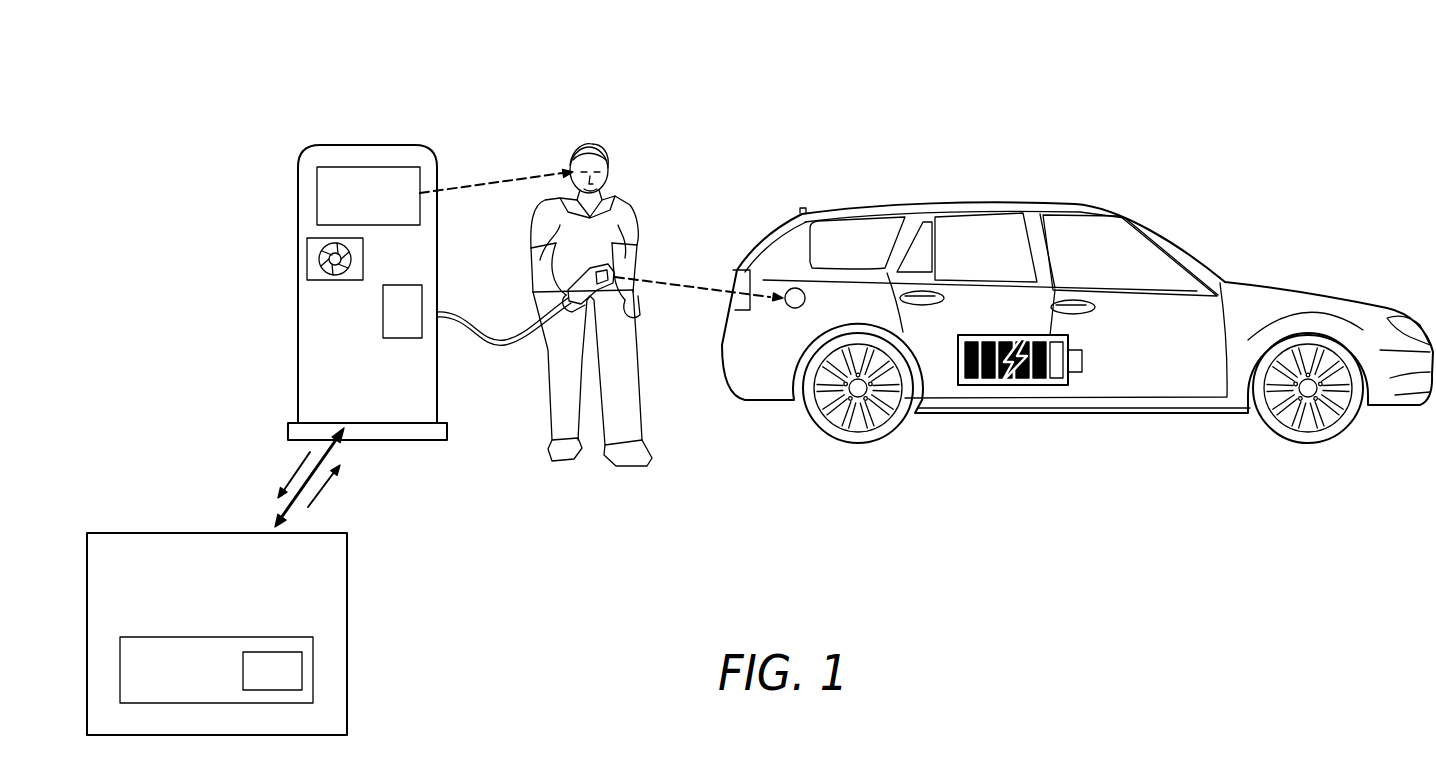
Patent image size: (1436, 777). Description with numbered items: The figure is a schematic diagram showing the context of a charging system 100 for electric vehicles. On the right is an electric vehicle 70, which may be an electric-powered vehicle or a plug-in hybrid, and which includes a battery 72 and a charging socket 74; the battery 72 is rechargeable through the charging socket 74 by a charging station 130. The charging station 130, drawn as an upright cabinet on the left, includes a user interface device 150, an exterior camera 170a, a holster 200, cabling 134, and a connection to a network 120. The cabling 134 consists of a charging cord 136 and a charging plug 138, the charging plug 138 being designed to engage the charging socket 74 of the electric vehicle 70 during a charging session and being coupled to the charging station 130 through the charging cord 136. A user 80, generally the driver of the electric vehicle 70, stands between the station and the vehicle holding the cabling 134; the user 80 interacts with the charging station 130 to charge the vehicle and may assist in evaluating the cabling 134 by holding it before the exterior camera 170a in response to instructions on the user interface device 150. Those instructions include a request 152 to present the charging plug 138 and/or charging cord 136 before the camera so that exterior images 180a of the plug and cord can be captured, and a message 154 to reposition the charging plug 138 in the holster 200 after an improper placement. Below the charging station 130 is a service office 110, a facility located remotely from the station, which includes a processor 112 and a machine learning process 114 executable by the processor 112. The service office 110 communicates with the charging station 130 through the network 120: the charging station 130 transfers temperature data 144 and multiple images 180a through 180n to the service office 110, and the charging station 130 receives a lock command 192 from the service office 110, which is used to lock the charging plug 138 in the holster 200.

The electric vehicle 70 is at (903, 202).
The battery 72 is at (990, 383).
The charging socket 74 is at (795, 288).
The user 80 is at (630, 215).
The charging system 100 is at (584, 82).
The service office 110 is at (347, 578).
The processor 112 is at (155, 637).
The machine learning process 114 is at (270, 652).
The network 120 is at (330, 448).
The charging station 130 is at (360, 145).
The cabling 134 is at (675, 258).
The charging cord 136 is at (512, 330).
The charging plug 138 is at (612, 275).
The temperature data 144 is at (187, 473).
The user interface device 150 is at (317, 197).
The request 152 is at (492, 178).
The message 154 is at (492, 148).
The exterior camera 170a is at (322, 262).
The exterior image 180a is at (187, 473).
The image 180n is at (300, 478).
The lock command 192 is at (320, 488).
The holster 200 is at (408, 338).